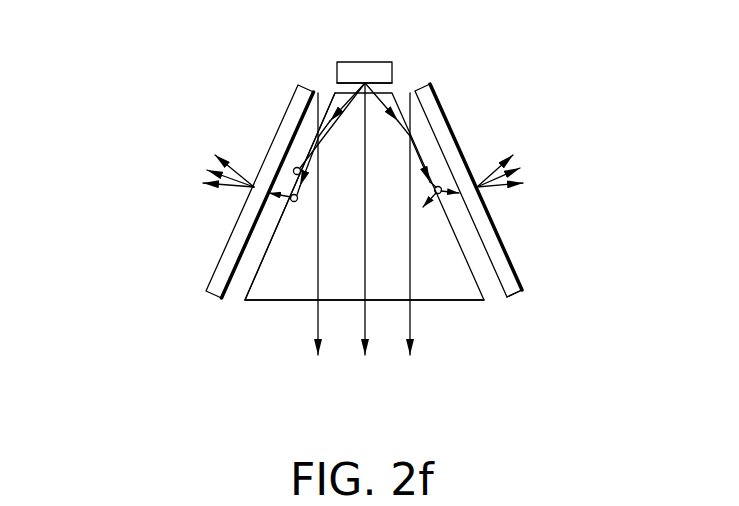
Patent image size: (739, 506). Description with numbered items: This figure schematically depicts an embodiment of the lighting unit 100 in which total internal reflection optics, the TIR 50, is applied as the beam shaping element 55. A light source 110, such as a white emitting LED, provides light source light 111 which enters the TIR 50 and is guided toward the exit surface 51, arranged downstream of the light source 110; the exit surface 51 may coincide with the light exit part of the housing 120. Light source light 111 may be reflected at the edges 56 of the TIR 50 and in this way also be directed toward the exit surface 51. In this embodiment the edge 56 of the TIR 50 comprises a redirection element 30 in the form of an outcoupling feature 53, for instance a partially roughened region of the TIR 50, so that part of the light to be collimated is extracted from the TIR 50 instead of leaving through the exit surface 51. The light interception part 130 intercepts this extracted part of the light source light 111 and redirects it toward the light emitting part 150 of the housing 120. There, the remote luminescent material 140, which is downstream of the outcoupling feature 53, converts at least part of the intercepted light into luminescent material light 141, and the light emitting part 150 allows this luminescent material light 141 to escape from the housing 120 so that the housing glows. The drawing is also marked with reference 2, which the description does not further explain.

The lighting unit 100 is at (128, 122).
The light source 110 is at (381, 71).
The redirection element 30 is at (405, 167).
The light source light 111 is at (410, 318).
The light interception part 130 is at (317, 201).
The housing 120 is at (532, 82).
The luminescent material 140 is at (242, 232).
The luminescent material light 141 is at (489, 168).
The light emitting part 150 is at (185, 278).
The total internal reflection optics 50 is at (473, 318).
The exit surface 51 is at (300, 300).
The outcoupling feature 53 is at (295, 168).
The beam shaping element 55 is at (252, 328).
The edge 56 is at (416, 178).
The device 2 is at (540, 262).